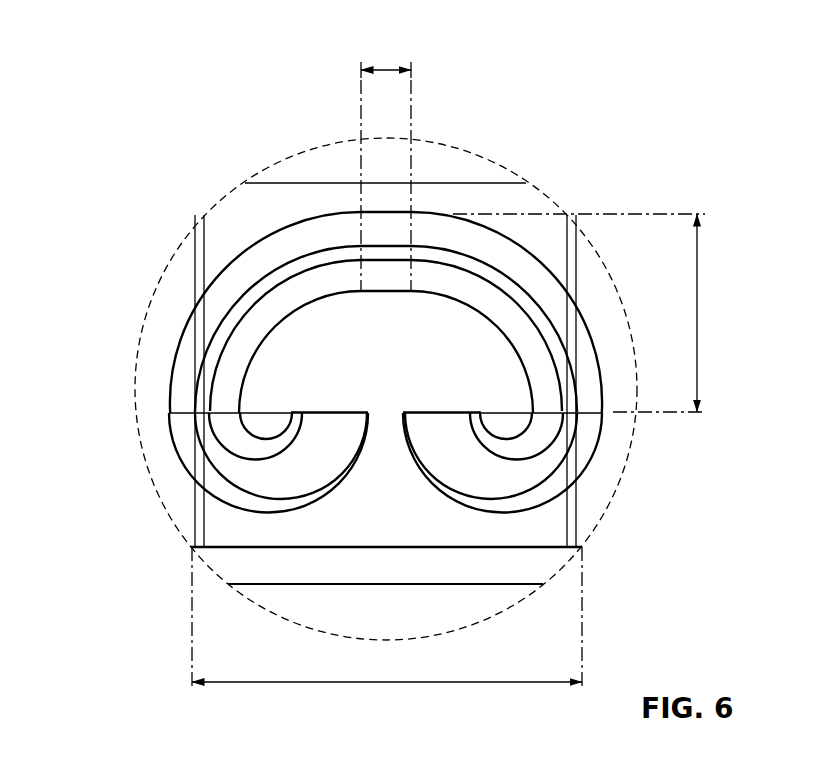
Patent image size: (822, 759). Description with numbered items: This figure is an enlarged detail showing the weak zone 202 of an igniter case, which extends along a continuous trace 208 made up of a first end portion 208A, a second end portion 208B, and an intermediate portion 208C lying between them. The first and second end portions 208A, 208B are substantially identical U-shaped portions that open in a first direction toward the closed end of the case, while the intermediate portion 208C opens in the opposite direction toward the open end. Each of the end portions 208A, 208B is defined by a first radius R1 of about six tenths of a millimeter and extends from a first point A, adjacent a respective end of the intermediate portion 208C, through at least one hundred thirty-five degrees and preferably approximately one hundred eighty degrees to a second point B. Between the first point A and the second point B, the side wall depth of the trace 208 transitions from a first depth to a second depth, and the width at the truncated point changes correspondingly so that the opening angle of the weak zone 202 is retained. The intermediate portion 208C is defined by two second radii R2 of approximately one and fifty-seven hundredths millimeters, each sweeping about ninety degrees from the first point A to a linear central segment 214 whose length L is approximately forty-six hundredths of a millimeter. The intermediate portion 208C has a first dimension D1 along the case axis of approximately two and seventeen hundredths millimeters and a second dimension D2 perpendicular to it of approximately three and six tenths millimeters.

The weak zone 202 is at (395, 357).
The continuous trace 208 is at (395, 341).
The first end portion 208A is at (263, 516).
The second end portion 208B is at (601, 453).
The intermediate portion 208C is at (531, 252).
The central segment 214 is at (388, 290).
The length of central segment L is at (388, 68).
The first dimension D1 is at (595, 313).
The second dimension D2 is at (387, 635).
The first radius R1 is at (534, 464).
The second radii R2 is at (625, 242).
The first point A is at (228, 410).
The second point B is at (330, 411).